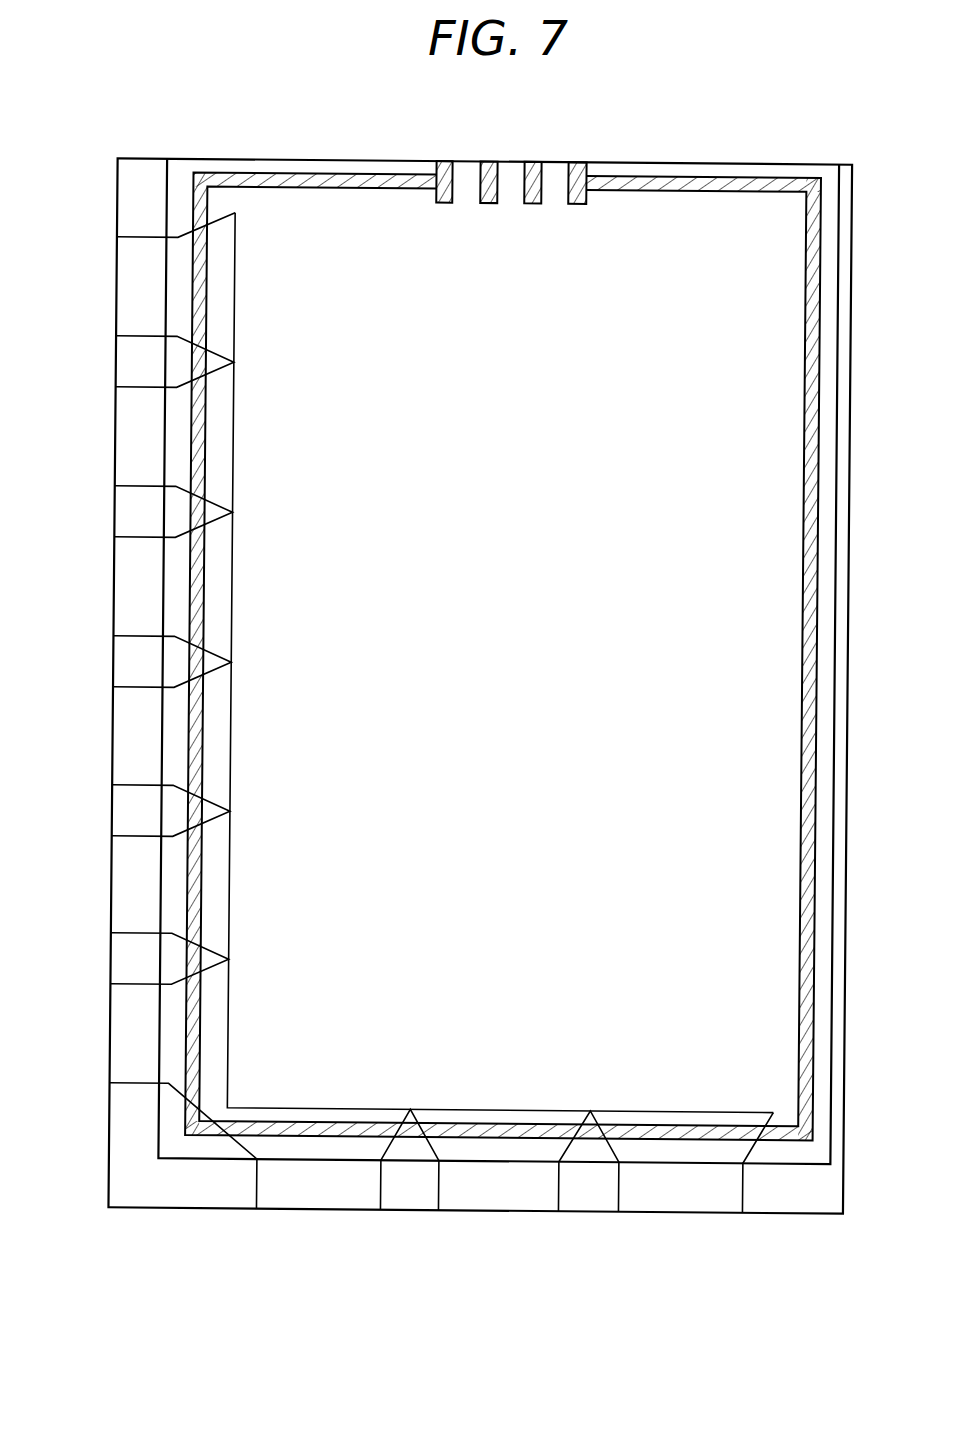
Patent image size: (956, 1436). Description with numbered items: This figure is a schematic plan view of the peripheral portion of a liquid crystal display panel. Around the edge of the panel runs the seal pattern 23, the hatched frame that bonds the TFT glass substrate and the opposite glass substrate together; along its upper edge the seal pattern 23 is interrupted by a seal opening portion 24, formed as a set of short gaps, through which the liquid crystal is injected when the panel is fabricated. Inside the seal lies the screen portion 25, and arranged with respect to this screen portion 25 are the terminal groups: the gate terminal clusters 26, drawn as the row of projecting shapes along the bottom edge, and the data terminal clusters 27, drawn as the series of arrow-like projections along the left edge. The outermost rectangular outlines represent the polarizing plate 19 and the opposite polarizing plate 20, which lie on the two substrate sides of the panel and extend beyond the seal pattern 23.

The polarizing plate 19 is at (108, 1118).
The opposite polarizing plate 20 is at (212, 1162).
The seal pattern 23 is at (430, 162).
The seal opening portion 24 is at (517, 168).
The screen portion 25 is at (295, 202).
The gate terminal cluster 26 is at (463, 1205).
The data terminal cluster 27 is at (135, 885).